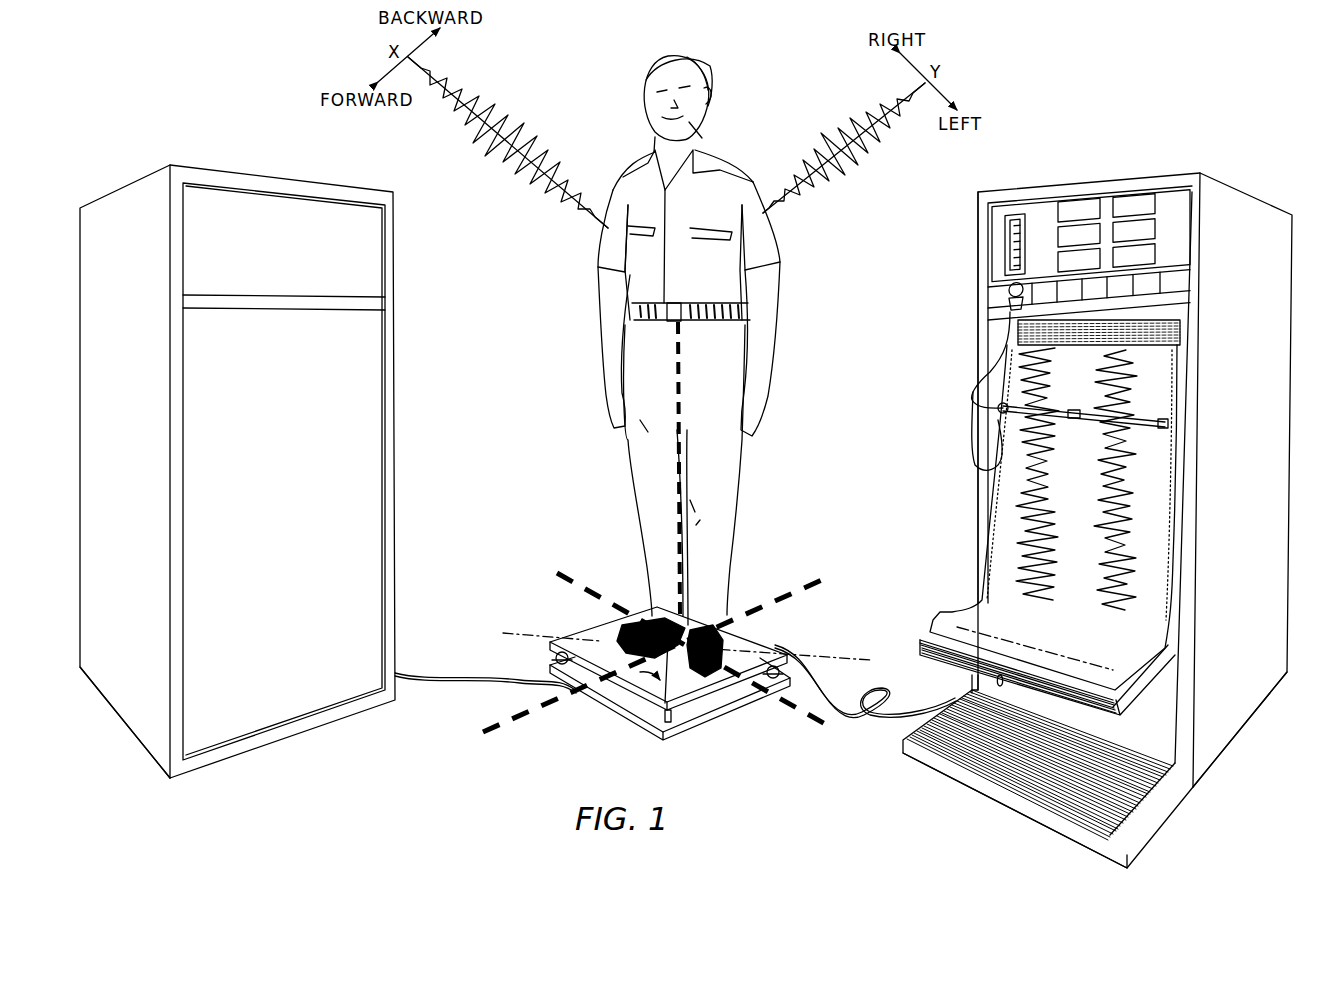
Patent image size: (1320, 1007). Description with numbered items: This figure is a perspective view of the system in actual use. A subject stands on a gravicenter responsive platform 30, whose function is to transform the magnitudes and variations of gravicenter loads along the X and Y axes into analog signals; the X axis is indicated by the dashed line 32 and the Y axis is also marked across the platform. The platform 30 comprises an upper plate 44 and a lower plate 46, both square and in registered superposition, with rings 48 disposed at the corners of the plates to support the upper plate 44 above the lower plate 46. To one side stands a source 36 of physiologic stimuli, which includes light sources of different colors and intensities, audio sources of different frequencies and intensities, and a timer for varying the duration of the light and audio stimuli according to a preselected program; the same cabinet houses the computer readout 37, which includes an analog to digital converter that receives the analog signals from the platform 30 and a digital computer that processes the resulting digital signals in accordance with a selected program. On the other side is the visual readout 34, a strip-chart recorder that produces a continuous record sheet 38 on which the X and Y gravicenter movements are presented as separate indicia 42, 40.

The gravicenter responsive platform 30 is at (686, 680).
The X axis 32 is at (525, 714).
The visual readout 34 is at (906, 520).
The source of physiologic stimuli 36 is at (232, 211).
The computer readout 37 is at (285, 522).
The continuous record sheet 38 is at (1000, 490).
The indicia of Y gravicenter movement 40 is at (1125, 598).
The indicia of X gravicenter movement 42 is at (1010, 565).
The upper plate 44 is at (748, 645).
The lower plate 46 is at (728, 698).
The rings 48 is at (556, 660).